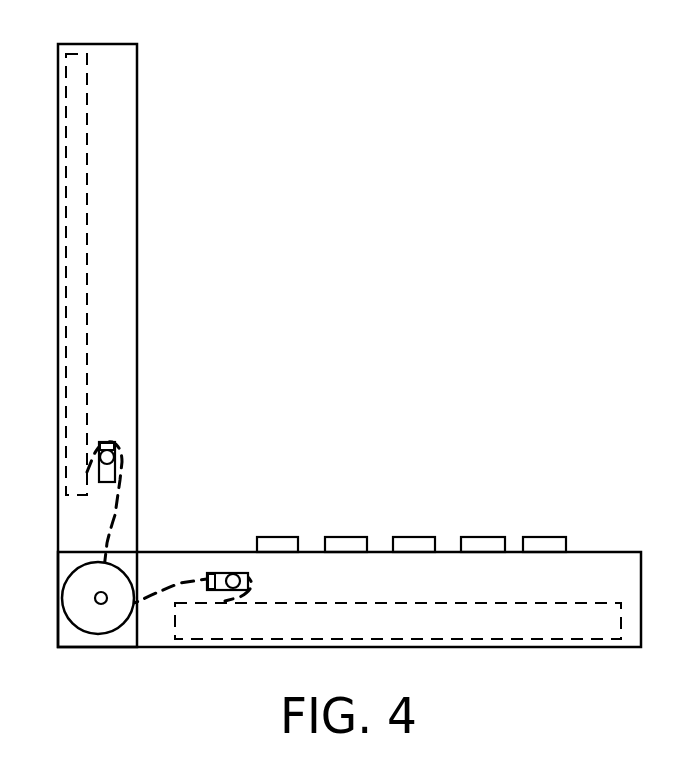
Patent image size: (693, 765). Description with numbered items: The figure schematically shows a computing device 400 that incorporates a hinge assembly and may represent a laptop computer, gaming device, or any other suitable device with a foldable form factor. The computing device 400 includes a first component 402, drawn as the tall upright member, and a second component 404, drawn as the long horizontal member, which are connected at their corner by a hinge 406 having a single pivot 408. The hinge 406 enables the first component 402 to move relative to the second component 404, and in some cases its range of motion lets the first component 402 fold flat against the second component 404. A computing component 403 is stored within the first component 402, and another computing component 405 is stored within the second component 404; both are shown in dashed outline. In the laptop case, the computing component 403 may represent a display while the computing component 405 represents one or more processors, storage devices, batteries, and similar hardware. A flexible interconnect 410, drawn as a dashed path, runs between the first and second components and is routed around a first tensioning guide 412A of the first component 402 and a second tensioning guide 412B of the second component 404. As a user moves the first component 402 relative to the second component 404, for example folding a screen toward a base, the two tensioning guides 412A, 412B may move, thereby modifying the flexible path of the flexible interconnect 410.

The computing device 400 is at (232, 122).
The first component 402 is at (137, 253).
The computing component 403 is at (87, 112).
The second component 404 is at (182, 552).
The computing component 405 is at (362, 602).
The hinge 406 is at (87, 635).
The single pivot 408 is at (105, 593).
The flexible interconnect 410 is at (115, 512).
The first tensioning guide 412A is at (115, 444).
The second tensioning guide 412B is at (243, 573).